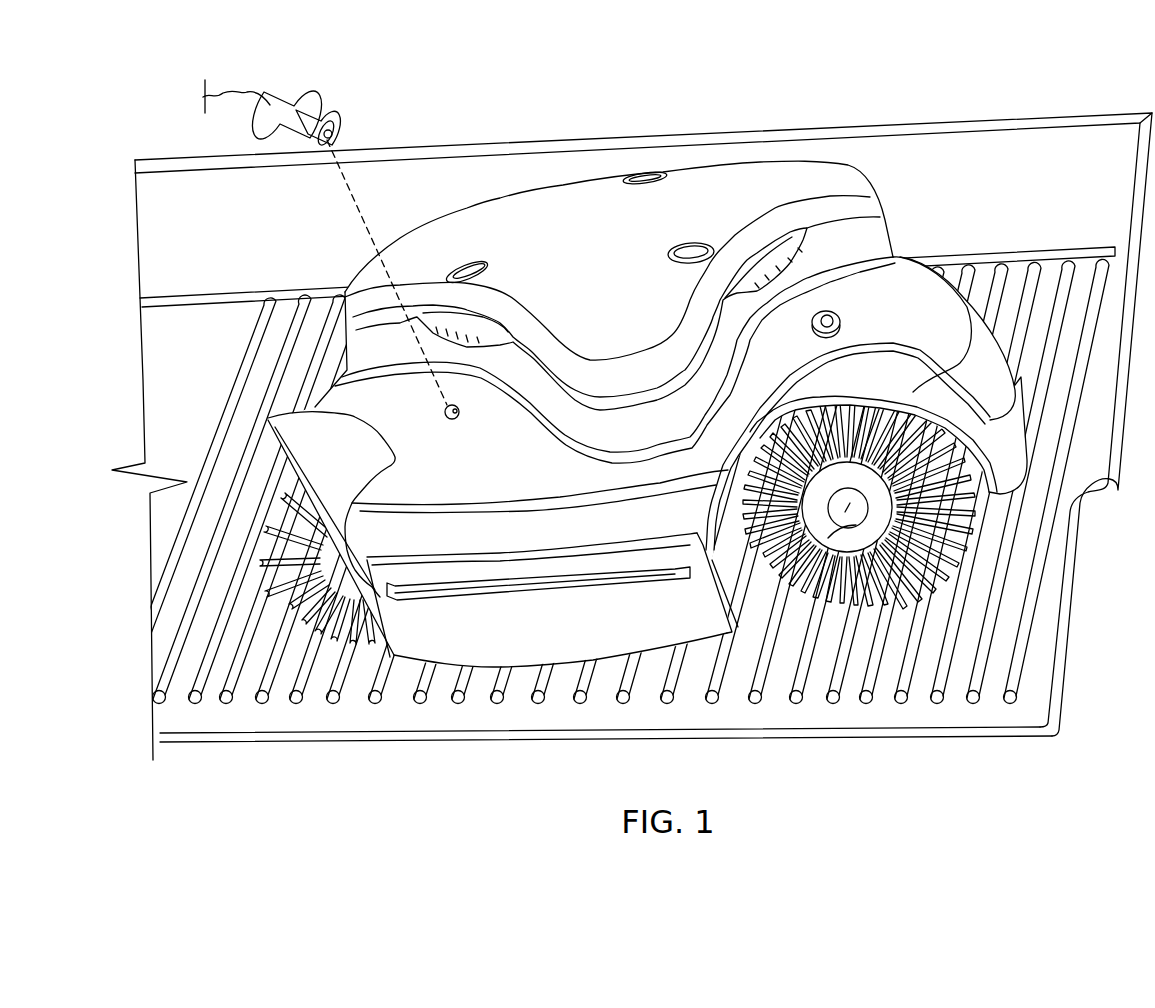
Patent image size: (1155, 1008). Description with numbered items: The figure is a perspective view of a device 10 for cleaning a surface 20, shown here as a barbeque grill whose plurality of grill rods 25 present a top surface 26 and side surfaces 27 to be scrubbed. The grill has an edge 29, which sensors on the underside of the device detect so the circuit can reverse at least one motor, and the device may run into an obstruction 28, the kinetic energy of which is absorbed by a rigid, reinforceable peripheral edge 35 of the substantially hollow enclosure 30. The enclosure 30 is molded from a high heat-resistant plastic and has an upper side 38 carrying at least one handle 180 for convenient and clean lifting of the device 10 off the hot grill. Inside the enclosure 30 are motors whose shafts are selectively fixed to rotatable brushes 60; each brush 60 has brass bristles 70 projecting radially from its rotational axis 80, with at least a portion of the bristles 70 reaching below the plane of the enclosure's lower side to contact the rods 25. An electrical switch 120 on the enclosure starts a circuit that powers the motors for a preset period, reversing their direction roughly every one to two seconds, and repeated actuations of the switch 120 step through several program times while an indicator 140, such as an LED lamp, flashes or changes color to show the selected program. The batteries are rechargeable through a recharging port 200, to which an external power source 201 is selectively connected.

The device 10 is at (643, 395).
The surface 20 is at (1063, 268).
The barbeque grill rods 25 is at (1016, 270).
The top surface 26 is at (988, 636).
The side surfaces 27 is at (980, 695).
The obstruction 28 is at (449, 172).
The edge 29 is at (465, 741).
The enclosure 30 is at (903, 285).
The peripheral edge 35 is at (652, 635).
The upper side 38 is at (708, 185).
The rotatable brush 60 is at (315, 527).
The bristles 70 is at (349, 557).
The rotational axis 80 is at (828, 538).
The electrical switch 120 is at (820, 337).
The indicator 140 is at (842, 319).
The handle 180 is at (490, 335).
The recharging port 200 is at (461, 418).
The external power source 201 is at (317, 107).